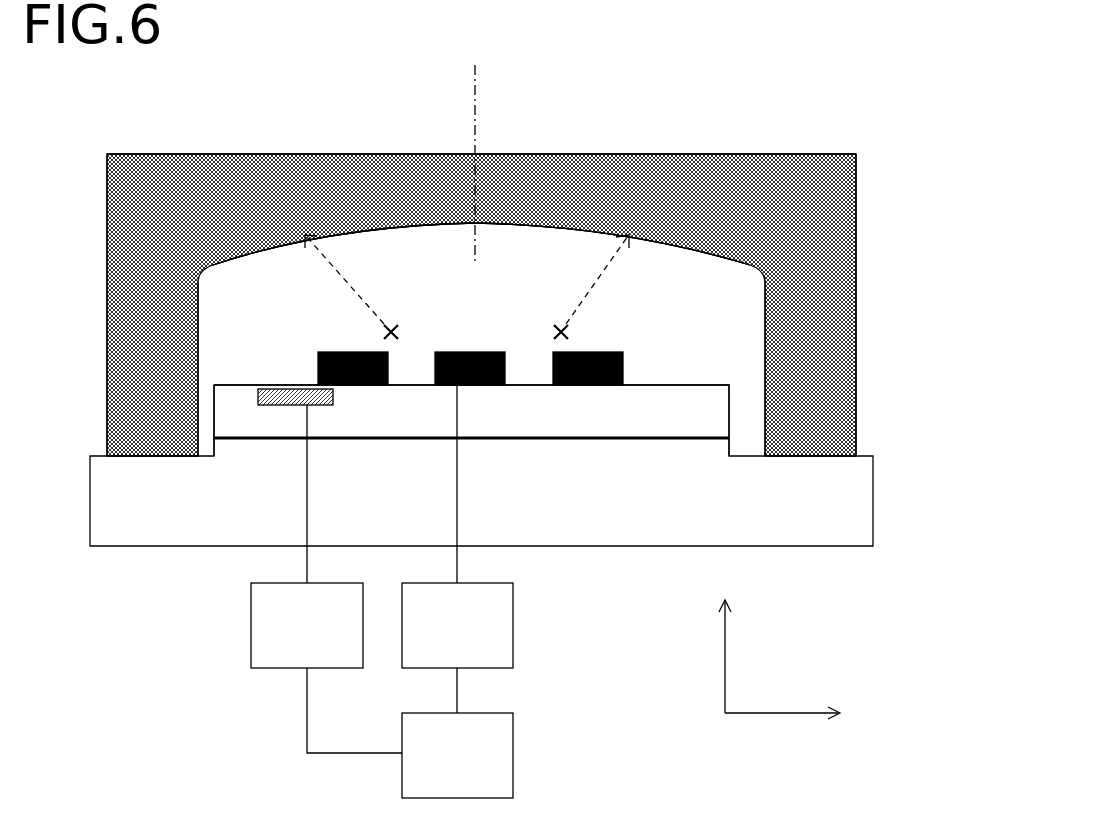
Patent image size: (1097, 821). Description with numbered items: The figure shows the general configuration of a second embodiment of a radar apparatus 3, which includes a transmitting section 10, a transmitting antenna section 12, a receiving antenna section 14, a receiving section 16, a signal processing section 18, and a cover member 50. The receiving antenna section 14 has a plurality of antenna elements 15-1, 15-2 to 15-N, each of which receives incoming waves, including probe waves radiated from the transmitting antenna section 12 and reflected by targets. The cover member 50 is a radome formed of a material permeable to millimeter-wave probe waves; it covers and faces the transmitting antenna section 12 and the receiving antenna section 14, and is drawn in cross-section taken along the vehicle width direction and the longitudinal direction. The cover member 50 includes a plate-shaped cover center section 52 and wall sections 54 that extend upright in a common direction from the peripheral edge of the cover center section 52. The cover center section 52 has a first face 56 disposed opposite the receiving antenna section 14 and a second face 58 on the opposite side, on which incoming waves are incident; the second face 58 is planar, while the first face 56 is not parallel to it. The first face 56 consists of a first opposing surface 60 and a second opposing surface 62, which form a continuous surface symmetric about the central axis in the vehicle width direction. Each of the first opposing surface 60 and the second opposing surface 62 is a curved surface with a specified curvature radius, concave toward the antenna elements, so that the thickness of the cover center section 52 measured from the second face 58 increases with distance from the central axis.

The radar apparatus 3 is at (296, 80).
The transmitting section 10 is at (251, 650).
The transmitting antenna section 12 is at (268, 419).
The receiving antenna section 14 is at (640, 360).
The antenna element 15-1 is at (378, 387).
The antenna element 15-2 is at (494, 387).
The antenna element 15-N is at (604, 387).
The receiving section 16 is at (513, 637).
The signal processing section 18 is at (513, 760).
The cover member 50 is at (838, 105).
The cover center section 52 is at (777, 154).
The wall section 54 is at (857, 330).
The first face 56 is at (525, 290).
The second face 58 is at (697, 128).
The first opposing surface 60 is at (392, 237).
The second opposing surface 62 is at (548, 237).